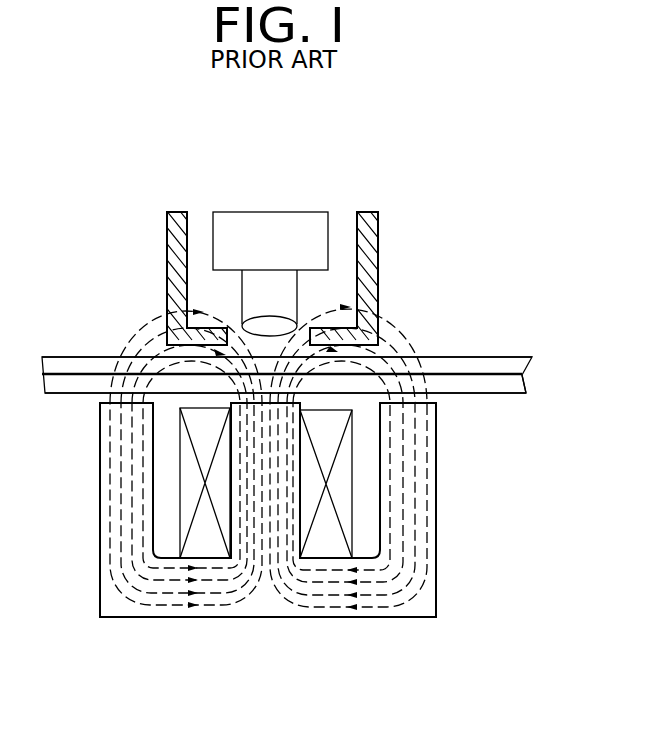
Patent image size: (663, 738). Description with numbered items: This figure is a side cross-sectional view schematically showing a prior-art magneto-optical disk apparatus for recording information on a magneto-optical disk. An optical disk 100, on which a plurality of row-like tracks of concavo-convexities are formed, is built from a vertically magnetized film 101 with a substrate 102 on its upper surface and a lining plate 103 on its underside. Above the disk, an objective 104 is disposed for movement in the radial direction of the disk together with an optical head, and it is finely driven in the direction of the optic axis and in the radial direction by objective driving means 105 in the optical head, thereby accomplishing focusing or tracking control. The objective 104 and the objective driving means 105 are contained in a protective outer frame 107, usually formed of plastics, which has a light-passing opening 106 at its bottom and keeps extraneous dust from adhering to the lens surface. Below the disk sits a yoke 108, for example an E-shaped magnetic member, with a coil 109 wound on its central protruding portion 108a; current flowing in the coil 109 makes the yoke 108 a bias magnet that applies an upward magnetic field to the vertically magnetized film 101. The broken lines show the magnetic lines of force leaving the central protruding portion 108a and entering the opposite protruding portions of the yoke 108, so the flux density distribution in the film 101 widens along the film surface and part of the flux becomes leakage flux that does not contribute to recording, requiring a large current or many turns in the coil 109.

The optical disk 100 is at (80, 355).
The vertically magnetized film 101 is at (523, 374).
The substrate 102 is at (500, 363).
The lining plate 103 is at (508, 383).
The objective 104 is at (270, 326).
The objective driving means 105 is at (313, 223).
The light-passing opening 106 is at (301, 328).
The protective outer frame 107 is at (168, 269).
The yoke 108 is at (126, 482).
The protruding portion 108a is at (264, 537).
The coil 109 is at (345, 510).